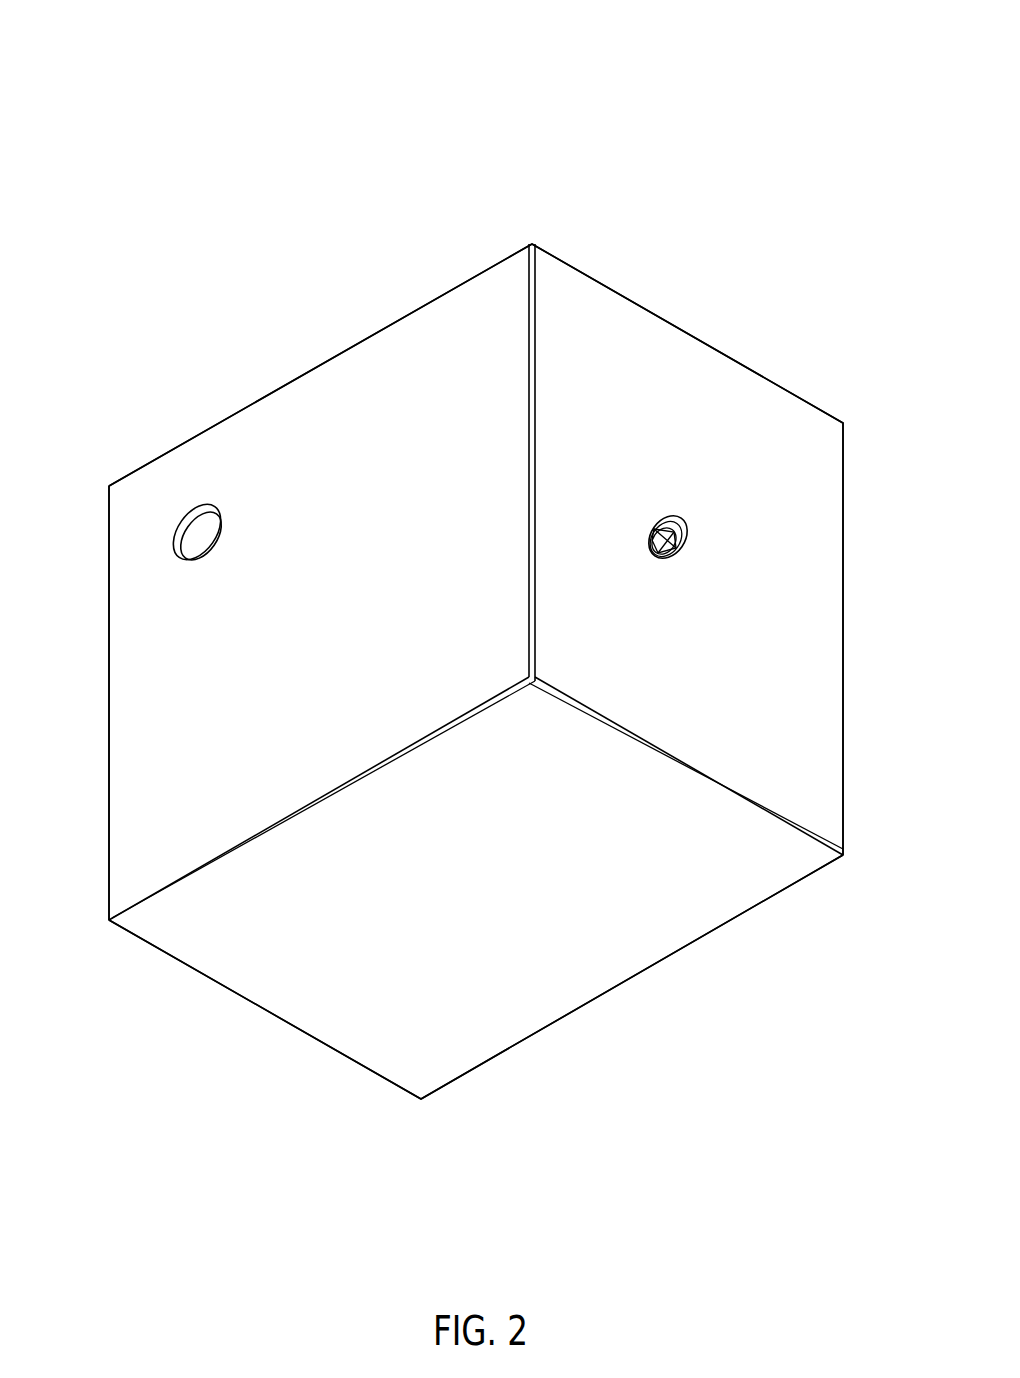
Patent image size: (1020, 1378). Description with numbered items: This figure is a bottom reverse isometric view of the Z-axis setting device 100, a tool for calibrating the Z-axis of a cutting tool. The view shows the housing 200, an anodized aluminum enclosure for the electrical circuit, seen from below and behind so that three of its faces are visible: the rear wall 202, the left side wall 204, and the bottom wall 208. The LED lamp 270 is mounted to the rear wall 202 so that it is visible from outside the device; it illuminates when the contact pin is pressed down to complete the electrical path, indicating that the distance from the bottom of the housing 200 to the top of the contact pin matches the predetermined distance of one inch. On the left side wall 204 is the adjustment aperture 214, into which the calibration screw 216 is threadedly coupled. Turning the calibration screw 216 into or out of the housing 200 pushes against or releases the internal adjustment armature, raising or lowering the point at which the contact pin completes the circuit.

The Z-axis setting device 100 is at (101, 181).
The housing 200 is at (278, 1020).
The rear wall 202 is at (162, 717).
The left side wall 204 is at (647, 370).
The bottom wall 208 is at (570, 978).
The adjustment aperture 214 is at (688, 565).
The calibration screw 216 is at (690, 537).
The LED lamp 270 is at (211, 528).